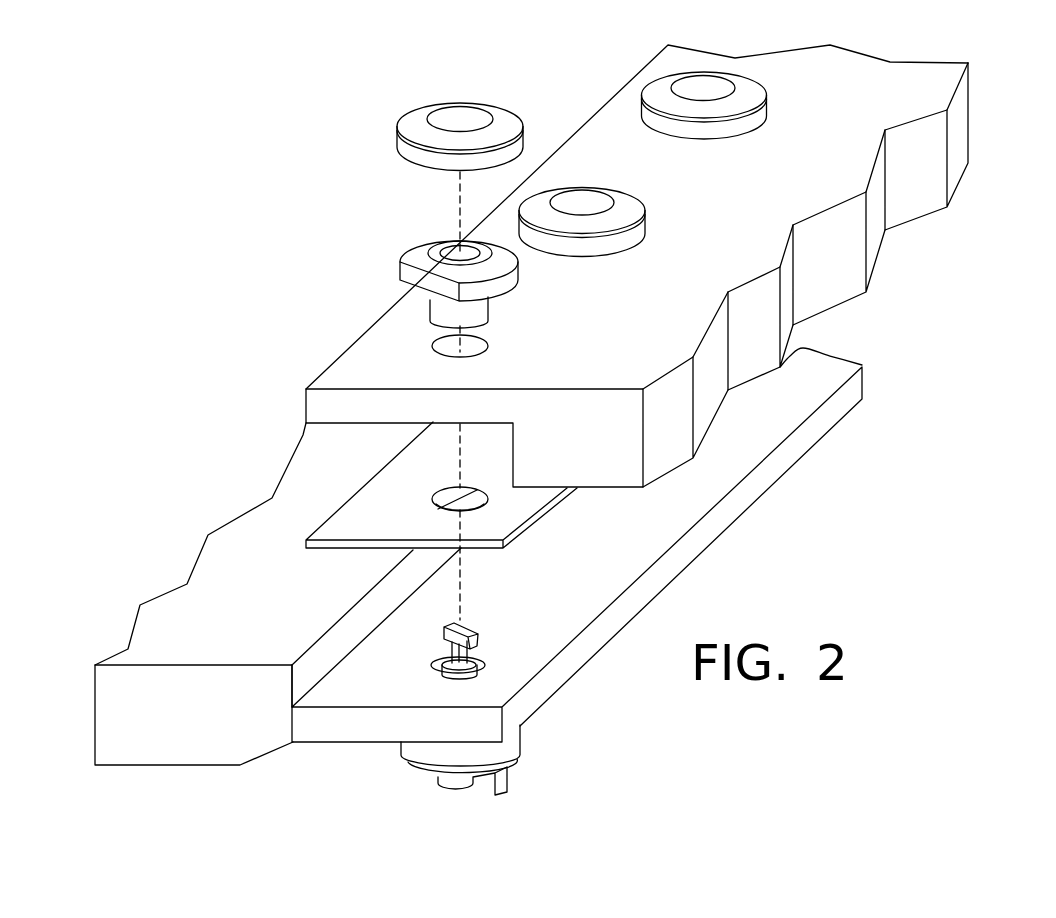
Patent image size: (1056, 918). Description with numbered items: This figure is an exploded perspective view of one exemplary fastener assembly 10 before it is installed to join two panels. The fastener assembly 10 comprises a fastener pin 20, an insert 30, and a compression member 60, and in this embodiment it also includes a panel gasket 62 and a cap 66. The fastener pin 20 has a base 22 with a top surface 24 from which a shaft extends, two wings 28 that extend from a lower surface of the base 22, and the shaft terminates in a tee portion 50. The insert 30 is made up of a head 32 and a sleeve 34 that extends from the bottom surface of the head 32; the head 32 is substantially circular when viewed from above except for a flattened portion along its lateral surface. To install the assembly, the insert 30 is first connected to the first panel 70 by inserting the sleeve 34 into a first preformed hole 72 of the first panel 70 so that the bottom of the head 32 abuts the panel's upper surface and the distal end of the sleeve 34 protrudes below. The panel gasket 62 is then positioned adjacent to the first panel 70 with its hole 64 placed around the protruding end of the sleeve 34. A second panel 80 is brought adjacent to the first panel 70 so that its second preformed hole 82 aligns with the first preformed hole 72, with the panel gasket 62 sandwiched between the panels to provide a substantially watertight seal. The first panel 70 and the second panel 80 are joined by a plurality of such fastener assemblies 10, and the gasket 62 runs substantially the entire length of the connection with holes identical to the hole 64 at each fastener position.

The fastener assembly 10 is at (344, 109).
The fastener pin 20 is at (247, 607).
The base 22 is at (402, 766).
The top surface 24 is at (402, 746).
The wings 28 is at (503, 799).
The insert 30 is at (658, 258).
The head 32 is at (520, 267).
The sleeve 34 is at (490, 307).
The tee portion 50 is at (480, 636).
The compression member 60 is at (520, 733).
The panel gasket 62 is at (367, 490).
The hole 64 is at (433, 498).
The cap 66 is at (503, 110).
The first panel 70 is at (627, 488).
The first preformed hole 72 is at (433, 347).
The second panel 80 is at (252, 664).
The second preformed hole 82 is at (487, 663).